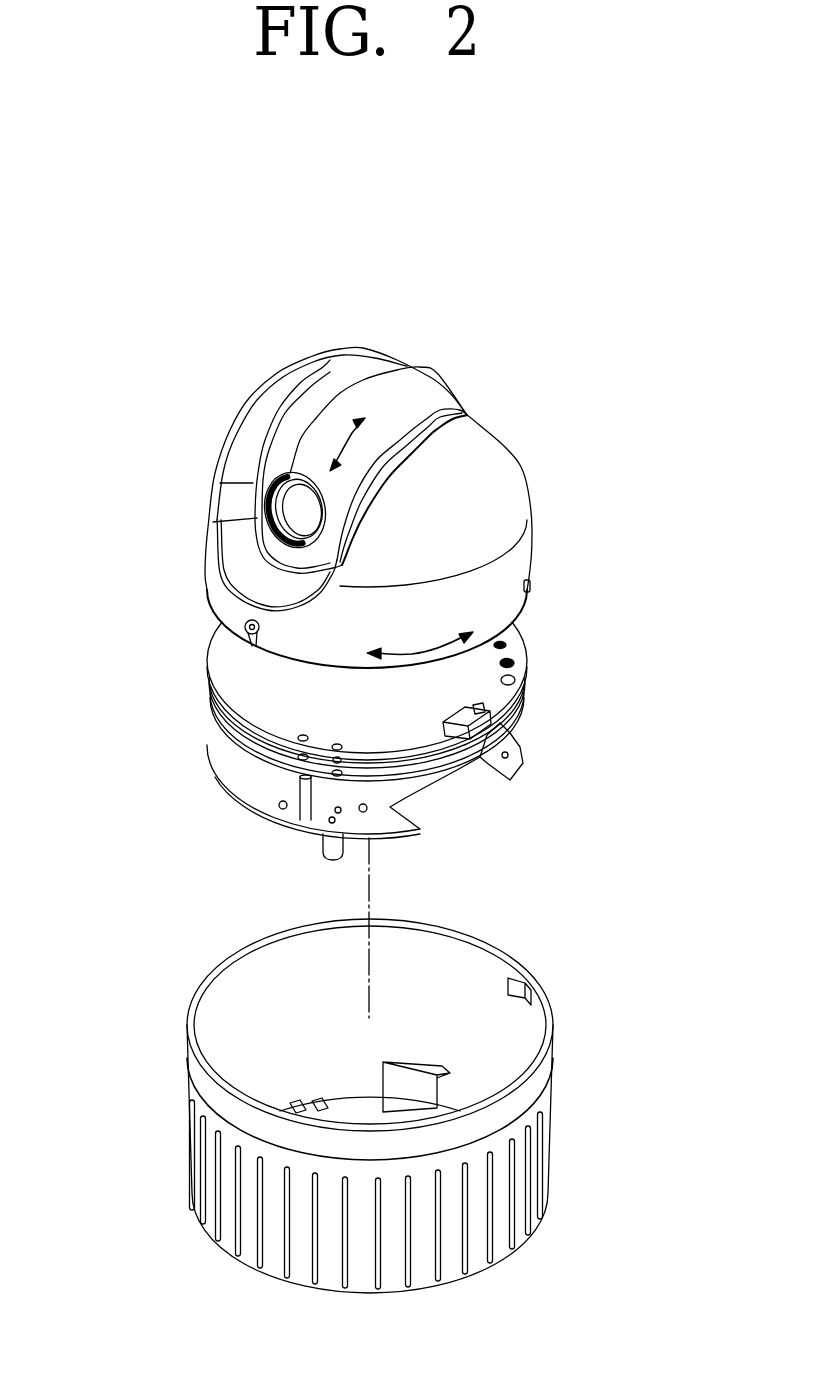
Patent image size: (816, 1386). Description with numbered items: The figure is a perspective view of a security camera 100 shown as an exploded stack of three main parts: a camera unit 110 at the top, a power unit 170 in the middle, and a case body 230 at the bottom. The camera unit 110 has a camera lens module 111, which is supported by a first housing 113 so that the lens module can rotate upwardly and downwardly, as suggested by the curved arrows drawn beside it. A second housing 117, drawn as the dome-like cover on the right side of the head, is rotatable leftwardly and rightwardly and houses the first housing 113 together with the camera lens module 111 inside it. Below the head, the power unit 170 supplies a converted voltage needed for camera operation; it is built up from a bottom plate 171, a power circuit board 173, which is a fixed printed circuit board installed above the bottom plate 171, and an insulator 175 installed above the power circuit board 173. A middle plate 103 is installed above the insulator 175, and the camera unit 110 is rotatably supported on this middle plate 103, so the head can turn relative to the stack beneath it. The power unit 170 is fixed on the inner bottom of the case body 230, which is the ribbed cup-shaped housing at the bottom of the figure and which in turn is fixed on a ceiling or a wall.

The security camera 100 is at (548, 281).
The camera unit 110 is at (249, 348).
The camera lens module 111 is at (292, 470).
The first housing 113 is at (408, 372).
The second housing 117 is at (507, 478).
The middle plate 103 is at (227, 665).
The power unit 170 is at (120, 797).
The insulator 175 is at (218, 711).
The power circuit board 173 is at (217, 735).
The bottom plate 171 is at (247, 783).
The case body 230 is at (207, 1150).